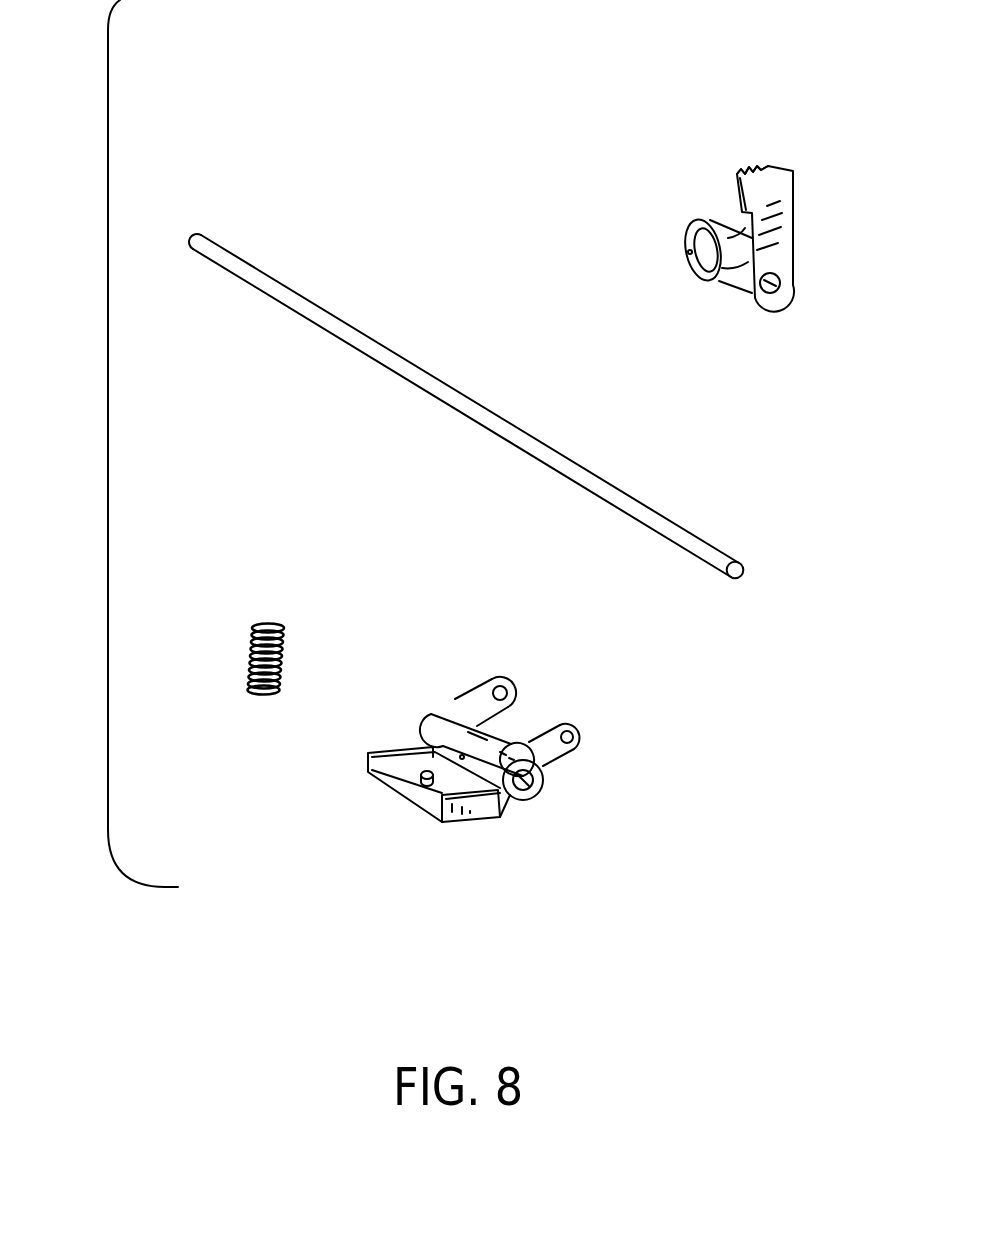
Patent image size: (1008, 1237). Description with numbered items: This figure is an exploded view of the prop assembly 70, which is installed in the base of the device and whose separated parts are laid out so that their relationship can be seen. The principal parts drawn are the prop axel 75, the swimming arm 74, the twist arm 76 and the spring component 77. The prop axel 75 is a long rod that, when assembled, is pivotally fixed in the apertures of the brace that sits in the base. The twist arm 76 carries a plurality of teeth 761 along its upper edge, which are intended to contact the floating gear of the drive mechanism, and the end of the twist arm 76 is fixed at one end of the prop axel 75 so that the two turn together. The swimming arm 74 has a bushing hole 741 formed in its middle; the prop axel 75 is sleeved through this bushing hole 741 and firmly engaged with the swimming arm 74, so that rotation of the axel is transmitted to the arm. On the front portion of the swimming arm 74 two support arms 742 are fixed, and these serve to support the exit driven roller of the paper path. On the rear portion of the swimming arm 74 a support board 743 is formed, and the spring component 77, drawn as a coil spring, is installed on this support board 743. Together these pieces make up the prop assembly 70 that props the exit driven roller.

The prop assembly 70 is at (104, 443).
The swimming arm 74 is at (440, 718).
The bushing hole 741 is at (533, 787).
The support arms 742 is at (542, 727).
The support board 743 is at (405, 775).
The prop axel 75 is at (432, 385).
The twist arm 76 is at (777, 260).
The teeth 761 is at (757, 163).
The spring component 77 is at (253, 642).